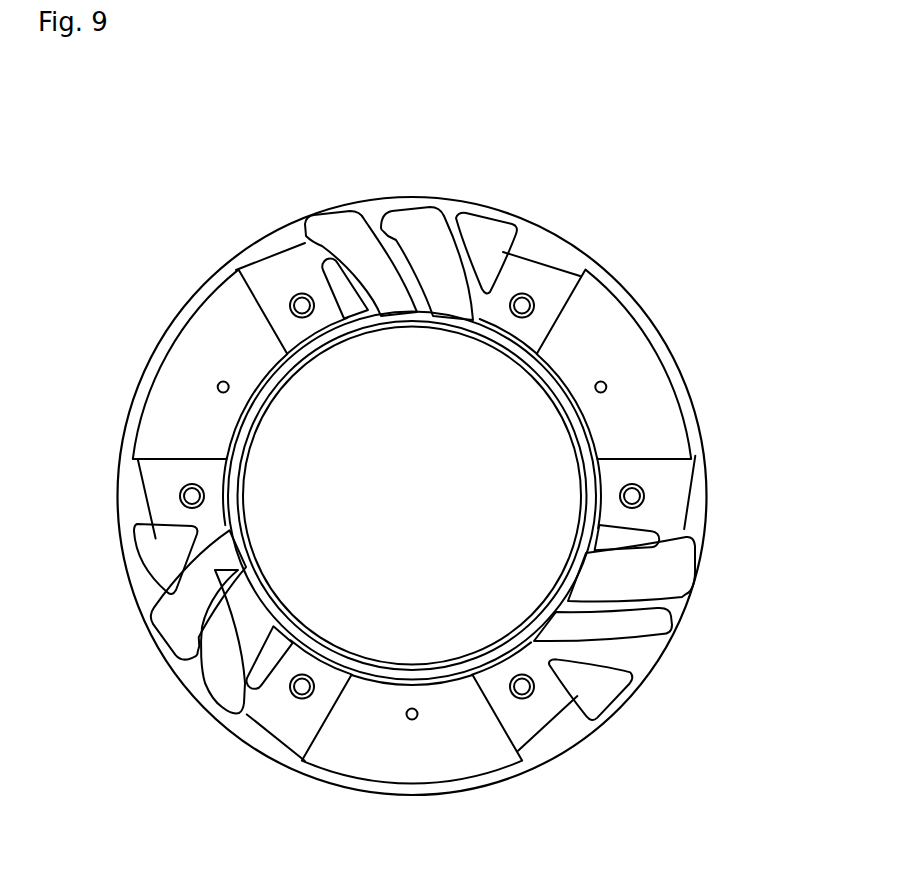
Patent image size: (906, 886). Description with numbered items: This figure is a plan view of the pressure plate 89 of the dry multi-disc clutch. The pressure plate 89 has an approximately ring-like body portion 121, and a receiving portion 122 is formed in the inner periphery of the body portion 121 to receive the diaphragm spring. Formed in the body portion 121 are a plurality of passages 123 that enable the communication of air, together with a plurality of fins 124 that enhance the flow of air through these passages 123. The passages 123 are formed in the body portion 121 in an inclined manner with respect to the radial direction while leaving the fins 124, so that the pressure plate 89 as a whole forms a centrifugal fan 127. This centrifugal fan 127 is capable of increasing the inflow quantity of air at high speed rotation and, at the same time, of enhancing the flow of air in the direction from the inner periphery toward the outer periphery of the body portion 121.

The pressure plate 89 is at (267, 163).
The body portion 121 is at (540, 284).
The receiving portion 122 is at (323, 640).
The passages 123 is at (387, 240).
The fins 124 is at (338, 232).
The centrifugal fan 127 is at (420, 411).